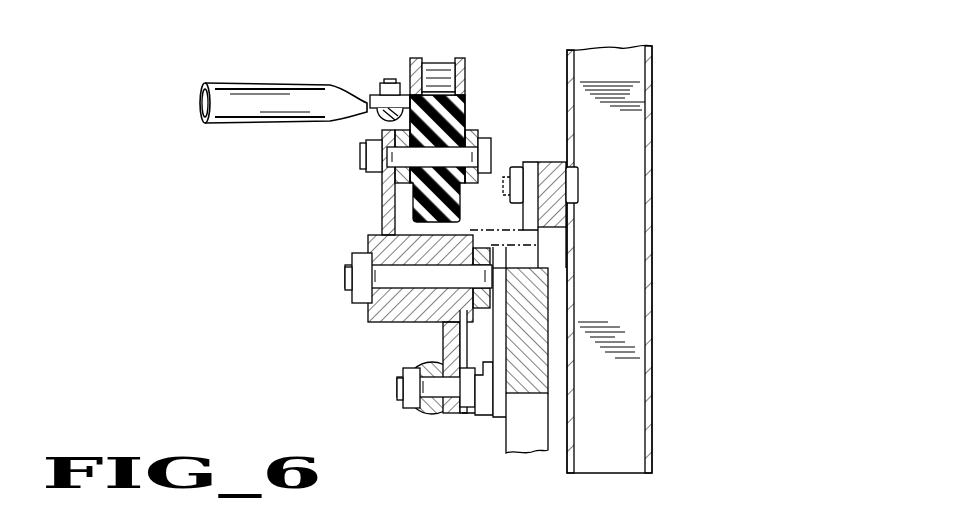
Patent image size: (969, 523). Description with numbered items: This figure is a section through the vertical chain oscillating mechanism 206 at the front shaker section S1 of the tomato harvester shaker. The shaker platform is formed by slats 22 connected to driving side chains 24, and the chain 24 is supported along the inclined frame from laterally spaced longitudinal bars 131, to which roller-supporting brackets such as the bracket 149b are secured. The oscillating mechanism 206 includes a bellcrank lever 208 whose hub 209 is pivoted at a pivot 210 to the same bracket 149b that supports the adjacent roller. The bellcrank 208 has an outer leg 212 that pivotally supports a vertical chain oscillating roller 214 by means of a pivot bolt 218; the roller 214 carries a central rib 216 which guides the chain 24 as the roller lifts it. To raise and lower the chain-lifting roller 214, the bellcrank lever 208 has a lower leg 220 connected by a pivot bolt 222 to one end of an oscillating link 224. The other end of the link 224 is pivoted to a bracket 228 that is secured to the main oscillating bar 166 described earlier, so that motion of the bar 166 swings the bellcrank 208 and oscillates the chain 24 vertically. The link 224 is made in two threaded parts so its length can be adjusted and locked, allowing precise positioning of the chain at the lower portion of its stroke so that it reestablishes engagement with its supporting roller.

The front shaker section S1 is at (120, 151).
The slats 22 is at (217, 84).
The driving side chains 24 is at (445, 61).
The central rib 216 is at (458, 91).
The vertical chain oscillating roller 214 is at (466, 114).
The pivot bolt 218 is at (362, 157).
The outer leg 212 is at (383, 180).
The oscillating mechanism 206 is at (345, 203).
The bellcrank lever 208 is at (362, 224).
The hub 209 is at (370, 306).
The pivot 210 is at (347, 279).
The lower leg 220 is at (445, 352).
The bracket 149b is at (478, 310).
The pivot bolt 222 is at (397, 388).
The oscillating link 224 is at (425, 414).
The bracket 228 is at (498, 418).
The main oscillating bar 166 is at (546, 288).
The longitudinal bars 131 is at (553, 167).